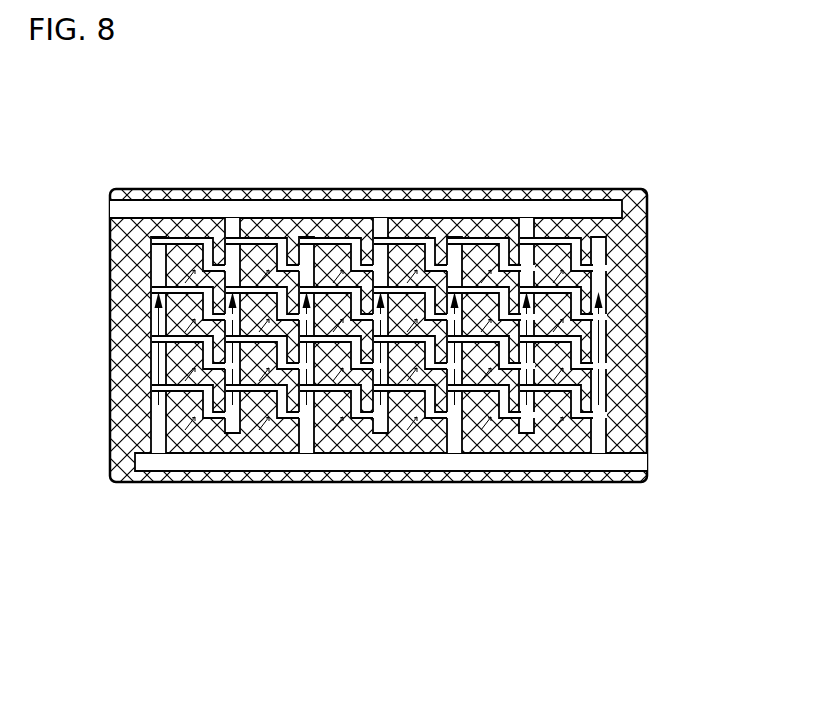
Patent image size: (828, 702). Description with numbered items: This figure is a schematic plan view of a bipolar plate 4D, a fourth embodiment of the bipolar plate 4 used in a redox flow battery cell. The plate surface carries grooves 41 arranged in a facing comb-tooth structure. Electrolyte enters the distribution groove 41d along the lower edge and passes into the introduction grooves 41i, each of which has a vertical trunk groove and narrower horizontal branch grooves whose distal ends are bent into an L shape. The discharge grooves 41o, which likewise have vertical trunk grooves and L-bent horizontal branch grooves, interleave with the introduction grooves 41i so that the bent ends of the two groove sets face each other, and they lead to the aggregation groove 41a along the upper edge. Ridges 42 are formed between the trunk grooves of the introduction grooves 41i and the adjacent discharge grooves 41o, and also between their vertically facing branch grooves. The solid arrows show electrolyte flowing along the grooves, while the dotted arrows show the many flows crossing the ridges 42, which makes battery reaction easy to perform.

The bipolar plate 4 is at (378, 286).
The bipolar plate 4D is at (377, 191).
The grooves 41 is at (378, 347).
The aggregation groove 41a is at (290, 212).
The distribution groove 41d is at (305, 458).
The introduction grooves 41i is at (592, 458).
The discharge grooves 41o is at (531, 216).
The ridges 42 is at (172, 276).